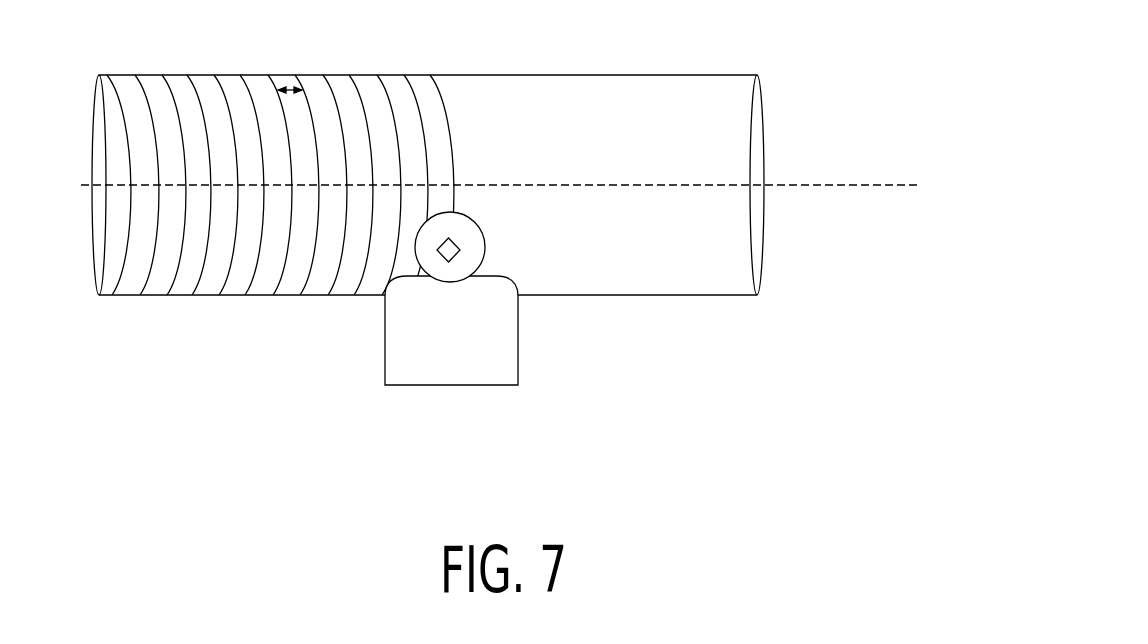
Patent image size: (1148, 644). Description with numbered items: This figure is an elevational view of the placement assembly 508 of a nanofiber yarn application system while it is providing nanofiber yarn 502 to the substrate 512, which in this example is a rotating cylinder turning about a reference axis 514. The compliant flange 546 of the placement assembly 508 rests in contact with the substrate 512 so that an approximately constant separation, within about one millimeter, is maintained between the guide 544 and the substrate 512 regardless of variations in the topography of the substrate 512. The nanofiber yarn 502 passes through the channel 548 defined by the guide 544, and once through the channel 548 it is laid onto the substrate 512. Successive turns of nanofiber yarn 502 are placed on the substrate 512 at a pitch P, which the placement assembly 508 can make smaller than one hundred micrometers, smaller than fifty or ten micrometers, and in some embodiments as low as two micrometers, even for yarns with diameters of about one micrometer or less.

The nanofiber yarn 502 is at (428, 230).
The placement assembly 508 is at (350, 319).
The substrate 512 is at (645, 75).
The reference axis 514 is at (820, 183).
The guide 544 is at (485, 243).
The channel 548 is at (483, 252).
The compliant flange 546 is at (488, 385).
The pitch P is at (290, 90).